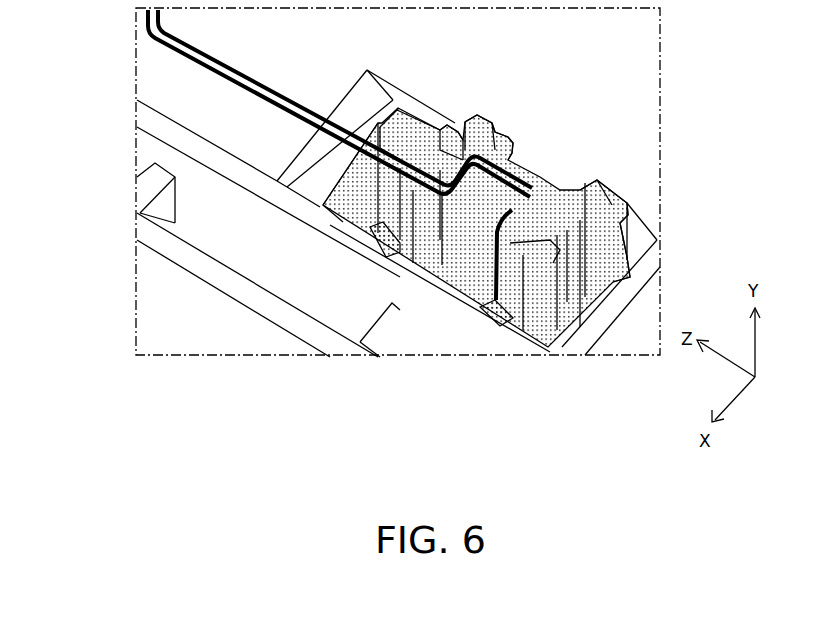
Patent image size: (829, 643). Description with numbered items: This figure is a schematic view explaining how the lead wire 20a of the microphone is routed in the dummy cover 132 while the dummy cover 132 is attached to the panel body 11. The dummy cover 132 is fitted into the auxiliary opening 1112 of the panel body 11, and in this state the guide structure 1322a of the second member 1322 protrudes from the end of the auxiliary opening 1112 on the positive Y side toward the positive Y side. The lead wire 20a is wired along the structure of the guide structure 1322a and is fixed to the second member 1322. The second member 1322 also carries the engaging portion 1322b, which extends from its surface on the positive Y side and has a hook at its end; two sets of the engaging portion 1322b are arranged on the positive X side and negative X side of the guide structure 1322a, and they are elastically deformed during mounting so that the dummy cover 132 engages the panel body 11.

The panel body 11 is at (637, 97).
The lead wire 20a is at (215, 72).
The auxiliary opening 1112 is at (335, 183).
The dummy cover 132 is at (337, 212).
The second member 1322 is at (356, 220).
The guide structure 1322a is at (446, 130).
The engaging portion 1322b is at (582, 183).